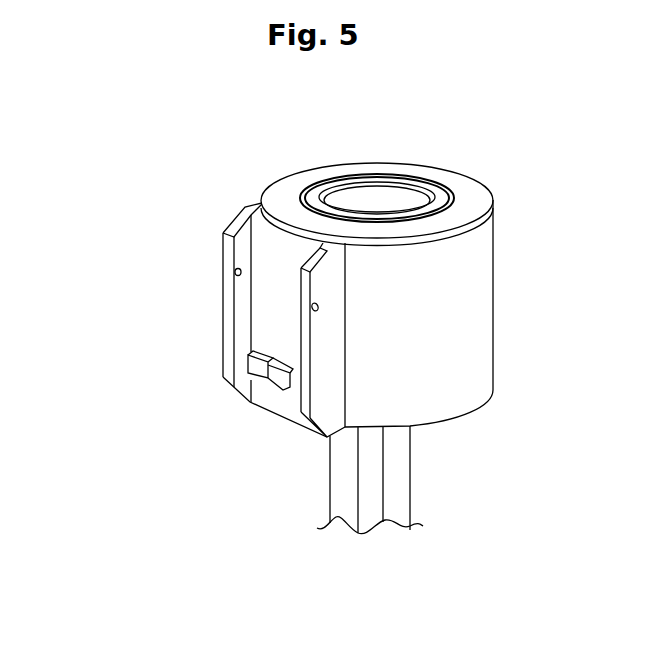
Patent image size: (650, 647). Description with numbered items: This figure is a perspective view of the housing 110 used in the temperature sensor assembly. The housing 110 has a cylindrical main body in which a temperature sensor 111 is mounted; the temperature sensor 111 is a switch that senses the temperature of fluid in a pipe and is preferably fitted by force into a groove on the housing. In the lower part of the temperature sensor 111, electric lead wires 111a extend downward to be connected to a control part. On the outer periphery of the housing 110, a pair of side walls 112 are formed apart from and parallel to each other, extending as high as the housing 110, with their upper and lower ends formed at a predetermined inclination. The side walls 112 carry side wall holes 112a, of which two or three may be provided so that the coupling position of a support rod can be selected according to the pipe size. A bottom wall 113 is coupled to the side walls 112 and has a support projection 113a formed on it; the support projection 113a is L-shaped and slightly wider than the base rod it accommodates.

The housing 110 is at (163, 247).
The temperature sensor 111 is at (393, 190).
The electric lead wires 111a is at (345, 513).
The side walls 112 is at (227, 337).
The side wall holes 112a is at (238, 275).
The bottom wall 113 is at (282, 402).
The support projection 113a is at (259, 368).